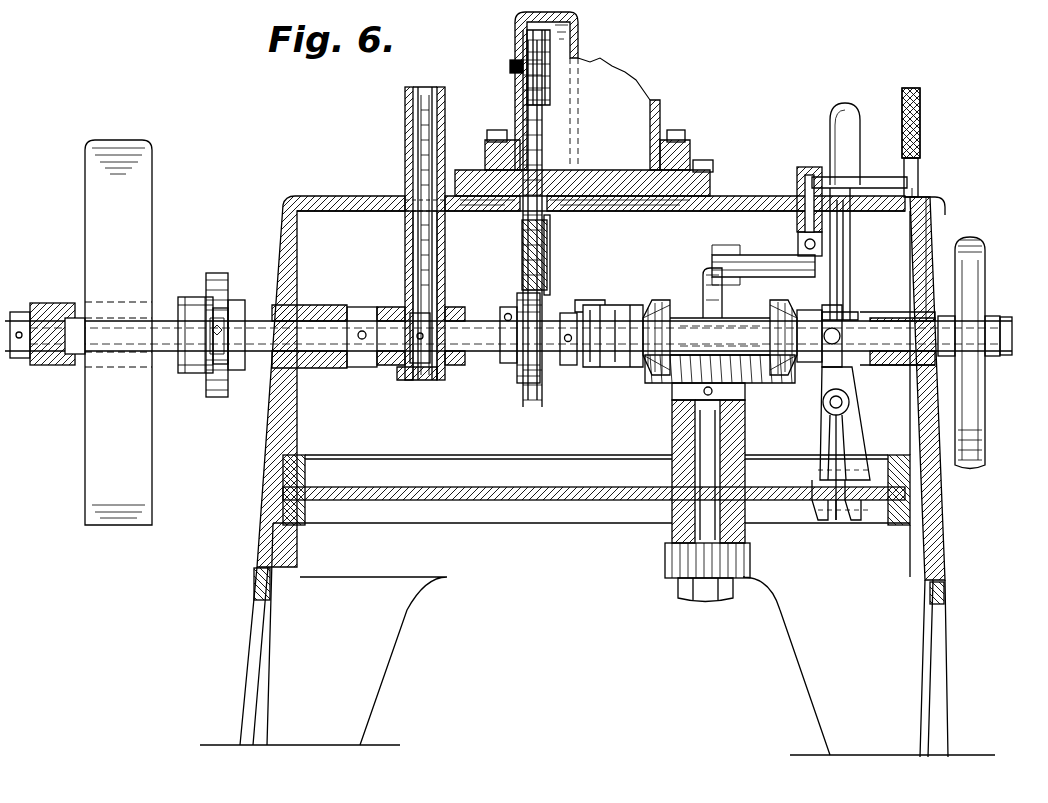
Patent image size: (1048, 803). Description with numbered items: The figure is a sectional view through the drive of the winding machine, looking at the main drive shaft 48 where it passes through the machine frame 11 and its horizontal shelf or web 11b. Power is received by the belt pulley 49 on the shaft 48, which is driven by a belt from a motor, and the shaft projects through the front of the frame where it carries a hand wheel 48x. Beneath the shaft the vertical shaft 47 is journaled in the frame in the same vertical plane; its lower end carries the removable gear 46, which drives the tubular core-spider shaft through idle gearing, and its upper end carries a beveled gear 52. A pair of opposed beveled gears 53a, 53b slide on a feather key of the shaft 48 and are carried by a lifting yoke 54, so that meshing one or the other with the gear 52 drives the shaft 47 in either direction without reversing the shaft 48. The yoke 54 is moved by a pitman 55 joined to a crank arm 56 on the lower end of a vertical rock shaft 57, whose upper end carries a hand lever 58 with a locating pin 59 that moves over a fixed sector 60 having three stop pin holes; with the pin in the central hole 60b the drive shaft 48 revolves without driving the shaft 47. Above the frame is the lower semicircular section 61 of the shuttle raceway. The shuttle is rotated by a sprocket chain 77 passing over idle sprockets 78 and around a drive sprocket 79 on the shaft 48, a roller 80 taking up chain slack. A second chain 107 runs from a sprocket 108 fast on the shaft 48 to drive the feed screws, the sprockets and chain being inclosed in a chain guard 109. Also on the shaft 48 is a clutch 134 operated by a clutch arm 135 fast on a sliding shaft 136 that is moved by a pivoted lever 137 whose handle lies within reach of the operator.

The frame 11 is at (265, 432).
The frame shelf 11b is at (505, 500).
The gear 46 is at (677, 568).
The vertical shaft 47 is at (706, 452).
The main drive shaft 48 is at (483, 322).
The hand wheel 48x is at (967, 392).
The belt pulley 49 is at (100, 165).
The beveled gear 52 is at (673, 383).
The beveled gear 53a is at (653, 308).
The beveled gear 53b is at (788, 317).
The lifting yoke 54 is at (703, 318).
The pitman 55 is at (770, 257).
The crank arm 56 is at (798, 238).
The vertical rock shaft 57 is at (810, 200).
The hand lever 58 is at (870, 180).
The locating pin 59 is at (928, 205).
The fixed sector 60 is at (918, 195).
The central stop pin hole 60b is at (947, 210).
The lower semicircular section 61 is at (660, 117).
The sprocket chain 77 is at (530, 213).
The idle sprockets 78 is at (577, 46).
The drive sprocket 79 is at (533, 402).
The roller 80 is at (550, 259).
The chain 107 is at (427, 163).
The sprocket 108 is at (413, 307).
The chain guard 109 is at (407, 258).
The clutch 134 is at (193, 307).
The clutch arm 135 is at (220, 273).
The shaft 136 is at (182, 378).
The pivoted lever 137 is at (840, 257).